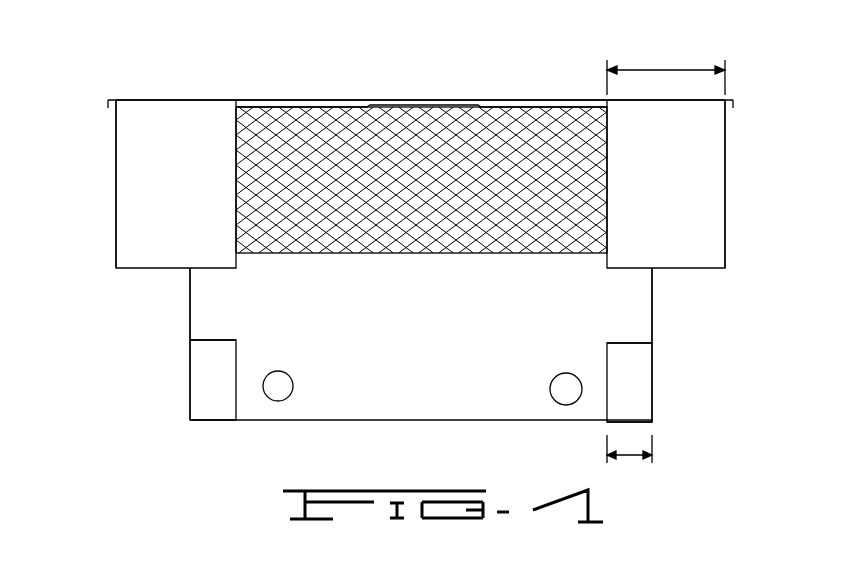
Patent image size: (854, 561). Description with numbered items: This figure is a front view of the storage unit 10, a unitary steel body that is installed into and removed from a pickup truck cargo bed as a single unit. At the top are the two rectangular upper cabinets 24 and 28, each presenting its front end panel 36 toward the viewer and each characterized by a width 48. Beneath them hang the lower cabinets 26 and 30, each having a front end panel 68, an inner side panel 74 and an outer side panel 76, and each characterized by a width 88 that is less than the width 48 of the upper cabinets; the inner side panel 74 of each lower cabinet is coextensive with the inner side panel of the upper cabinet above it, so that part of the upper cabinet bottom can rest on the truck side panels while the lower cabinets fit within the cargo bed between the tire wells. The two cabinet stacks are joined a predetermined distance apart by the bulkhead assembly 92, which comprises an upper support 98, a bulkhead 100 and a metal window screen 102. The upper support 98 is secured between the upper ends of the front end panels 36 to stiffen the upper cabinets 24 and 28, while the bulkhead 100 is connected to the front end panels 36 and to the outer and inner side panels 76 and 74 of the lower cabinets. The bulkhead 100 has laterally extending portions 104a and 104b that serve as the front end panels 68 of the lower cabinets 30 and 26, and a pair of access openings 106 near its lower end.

The storage unit 10 is at (150, 95).
The upper cabinet 24 is at (727, 143).
The lower cabinet 26 is at (652, 410).
The upper cabinet 28 is at (116, 153).
The lower cabinet 30 is at (190, 378).
The front end panel 36 is at (193, 113).
The width 48 is at (650, 70).
The front end panel 68 is at (213, 330).
The inner side panel 74 is at (232, 407).
The outer side panel 76 is at (190, 310).
The width 88 is at (630, 460).
The bulkhead assembly 92 is at (308, 98).
The upper support 98 is at (486, 103).
The bulkhead 100 is at (377, 412).
The metal window screen 102 is at (514, 133).
The laterally extending portion 104a is at (627, 330).
The laterally extending portion 104b is at (203, 286).
The access openings 106 is at (281, 393).